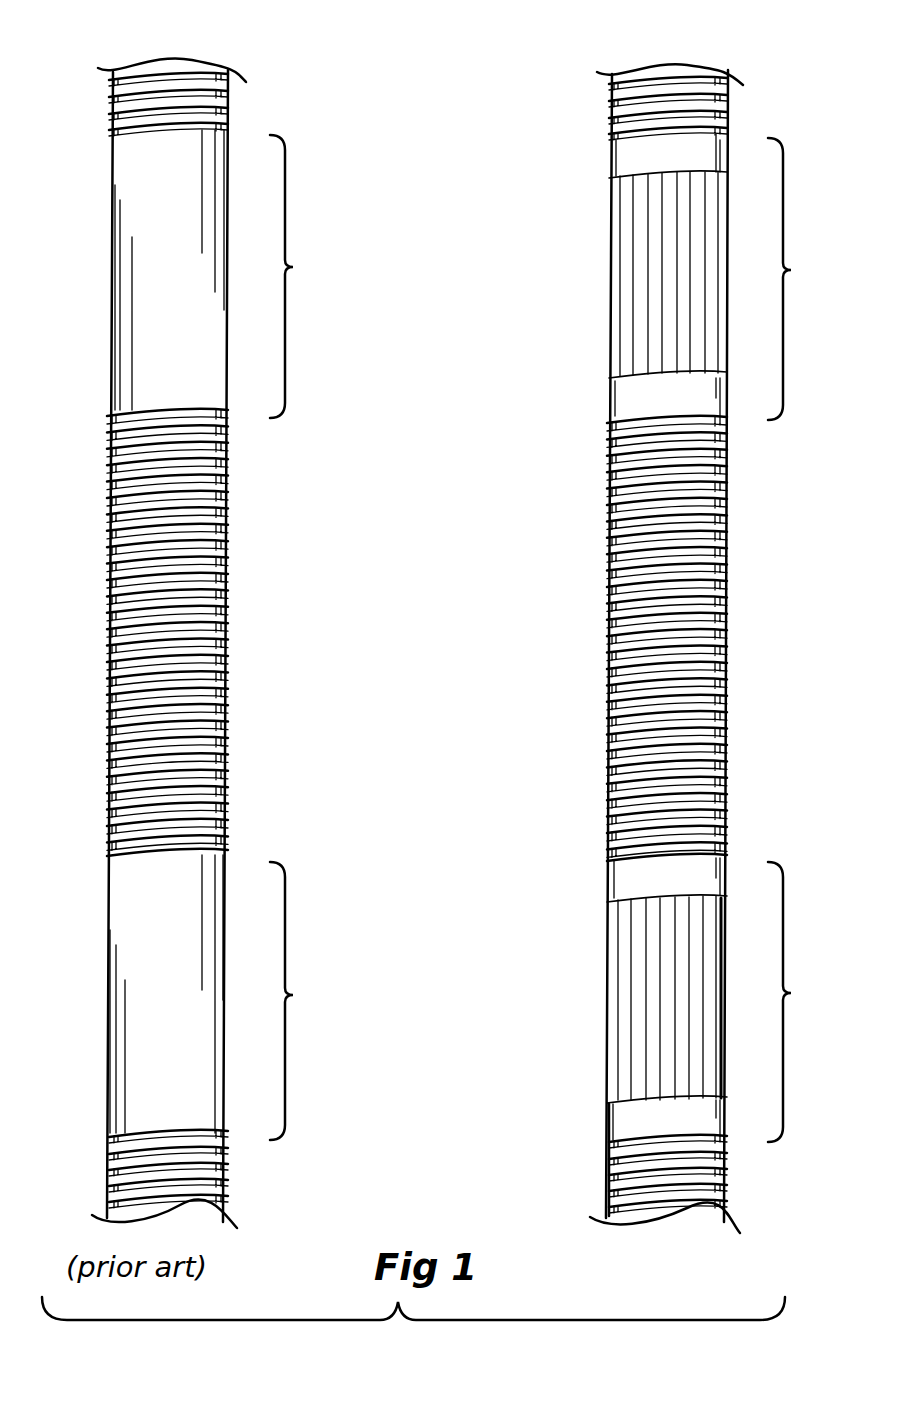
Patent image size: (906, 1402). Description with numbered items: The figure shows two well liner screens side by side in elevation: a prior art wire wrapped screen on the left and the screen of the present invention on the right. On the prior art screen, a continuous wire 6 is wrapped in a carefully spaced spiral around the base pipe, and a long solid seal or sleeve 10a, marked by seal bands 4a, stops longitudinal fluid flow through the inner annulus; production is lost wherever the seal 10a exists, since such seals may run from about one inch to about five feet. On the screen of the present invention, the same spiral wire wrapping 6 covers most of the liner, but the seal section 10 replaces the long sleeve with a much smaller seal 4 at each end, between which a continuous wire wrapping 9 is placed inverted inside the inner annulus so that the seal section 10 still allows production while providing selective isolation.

The seal 4a is at (128, 167).
The solid seal or sleeve 10a is at (315, 637).
The continuous wire 6 is at (200, 762).
The continuous wire wrapping 9 is at (630, 230).
The seal or sleeve 4 is at (628, 402).
The seal section 10 is at (808, 640).